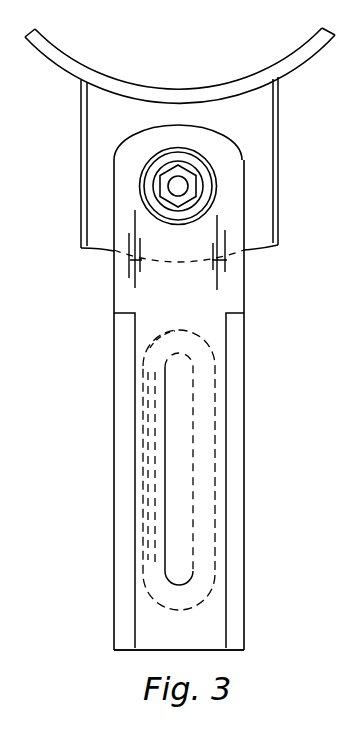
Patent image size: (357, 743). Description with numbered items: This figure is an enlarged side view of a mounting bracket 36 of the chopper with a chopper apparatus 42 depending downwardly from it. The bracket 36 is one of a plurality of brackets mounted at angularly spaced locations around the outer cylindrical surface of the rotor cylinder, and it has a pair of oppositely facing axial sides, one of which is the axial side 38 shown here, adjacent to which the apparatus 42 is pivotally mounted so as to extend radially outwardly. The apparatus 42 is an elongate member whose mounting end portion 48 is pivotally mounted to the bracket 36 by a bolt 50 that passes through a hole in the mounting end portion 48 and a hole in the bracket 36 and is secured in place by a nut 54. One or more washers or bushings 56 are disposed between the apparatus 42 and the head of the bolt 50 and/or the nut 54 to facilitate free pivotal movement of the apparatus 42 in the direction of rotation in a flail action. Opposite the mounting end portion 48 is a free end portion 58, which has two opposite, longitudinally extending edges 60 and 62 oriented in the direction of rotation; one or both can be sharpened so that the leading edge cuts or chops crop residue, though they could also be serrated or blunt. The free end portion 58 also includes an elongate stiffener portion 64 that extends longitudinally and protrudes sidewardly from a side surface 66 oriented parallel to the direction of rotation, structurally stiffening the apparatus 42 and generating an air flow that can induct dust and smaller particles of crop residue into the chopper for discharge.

The mounting bracket 36 is at (277, 124).
The axial side 38 is at (264, 92).
The chopper apparatus 42 is at (252, 275).
The mounting end portion 48 is at (245, 188).
The bolt 50 is at (181, 184).
The nut 54 is at (163, 182).
The washers or bushings 56 is at (158, 153).
The free end portion 58 is at (245, 620).
The longitudinally extending edge 60 is at (245, 415).
The longitudinally extending edge 62 is at (115, 432).
The stiffener portion 64 is at (215, 550).
The side surface 66 is at (214, 328).